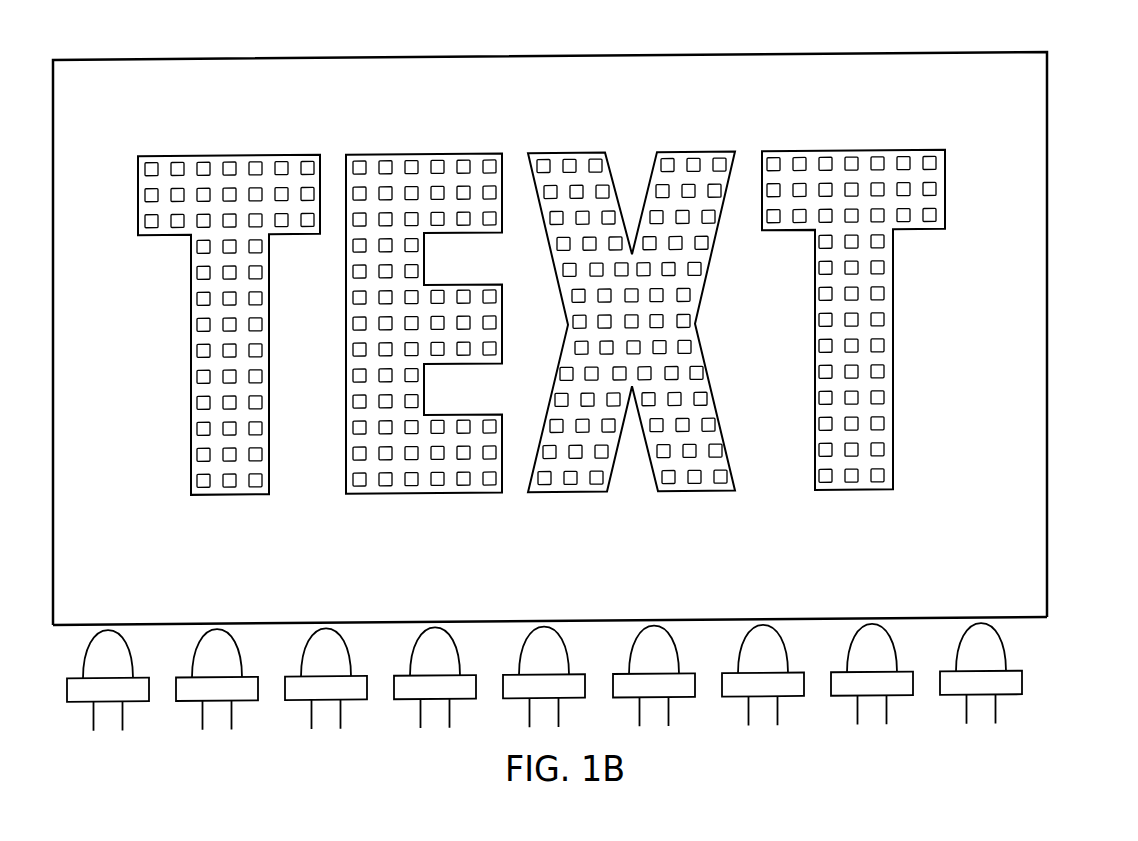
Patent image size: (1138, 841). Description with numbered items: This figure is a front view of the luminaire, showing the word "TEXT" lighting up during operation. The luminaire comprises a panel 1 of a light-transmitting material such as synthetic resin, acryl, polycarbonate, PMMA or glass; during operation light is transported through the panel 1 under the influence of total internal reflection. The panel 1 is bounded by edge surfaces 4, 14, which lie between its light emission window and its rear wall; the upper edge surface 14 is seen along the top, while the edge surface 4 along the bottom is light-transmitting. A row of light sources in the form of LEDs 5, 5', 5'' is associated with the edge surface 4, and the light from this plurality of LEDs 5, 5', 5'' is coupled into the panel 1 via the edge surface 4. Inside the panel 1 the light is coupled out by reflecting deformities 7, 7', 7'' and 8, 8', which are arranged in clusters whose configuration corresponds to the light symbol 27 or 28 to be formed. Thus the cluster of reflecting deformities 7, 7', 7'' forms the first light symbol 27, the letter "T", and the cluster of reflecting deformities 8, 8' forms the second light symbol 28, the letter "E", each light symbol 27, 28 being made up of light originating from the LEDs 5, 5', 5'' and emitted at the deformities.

The panel 1 is at (991, 30).
The edge surface 4 is at (1027, 619).
The light source 5 is at (88, 688).
The light source 5' is at (202, 687).
The light source 5'' is at (311, 687).
The reflecting deformity 7 is at (178, 481).
The reflecting deformity 7' is at (177, 455).
The reflecting deformity 7'' is at (177, 429).
The reflecting deformity 8 is at (338, 479).
The reflecting deformity 8' is at (337, 453).
The edge surface 14 is at (135, 58).
The light symbol 27 is at (295, 151).
The light symbol 28 is at (451, 152).